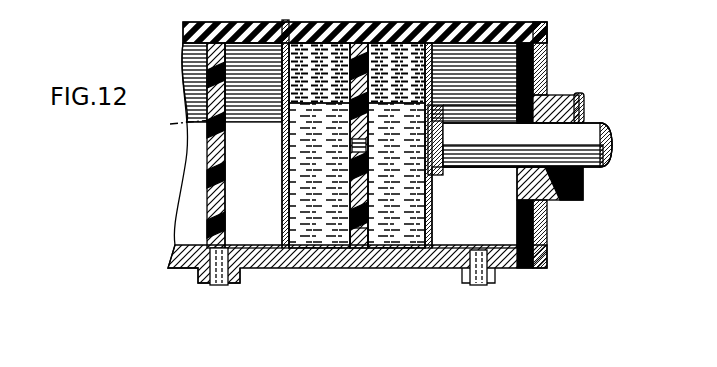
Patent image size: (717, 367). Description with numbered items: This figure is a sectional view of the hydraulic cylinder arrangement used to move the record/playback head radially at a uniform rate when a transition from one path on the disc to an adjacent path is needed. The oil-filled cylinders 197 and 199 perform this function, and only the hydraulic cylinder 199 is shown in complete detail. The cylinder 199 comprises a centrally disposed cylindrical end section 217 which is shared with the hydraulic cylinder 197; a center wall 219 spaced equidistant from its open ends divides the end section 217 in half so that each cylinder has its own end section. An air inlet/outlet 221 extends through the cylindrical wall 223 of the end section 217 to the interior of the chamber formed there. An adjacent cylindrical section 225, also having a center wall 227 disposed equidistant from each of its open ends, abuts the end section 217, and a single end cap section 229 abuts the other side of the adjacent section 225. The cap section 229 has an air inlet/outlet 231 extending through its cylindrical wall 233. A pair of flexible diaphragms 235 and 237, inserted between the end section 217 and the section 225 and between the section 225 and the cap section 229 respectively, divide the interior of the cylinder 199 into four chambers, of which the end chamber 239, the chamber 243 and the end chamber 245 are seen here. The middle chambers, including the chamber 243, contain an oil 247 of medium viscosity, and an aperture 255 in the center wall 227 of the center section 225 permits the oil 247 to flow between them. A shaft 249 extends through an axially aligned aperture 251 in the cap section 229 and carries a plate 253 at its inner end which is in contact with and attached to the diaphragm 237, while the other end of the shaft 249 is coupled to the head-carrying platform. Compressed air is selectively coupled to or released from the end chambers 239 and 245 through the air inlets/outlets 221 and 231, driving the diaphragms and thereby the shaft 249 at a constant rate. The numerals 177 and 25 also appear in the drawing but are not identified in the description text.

The cylindrical end section 217 is at (204, 21).
The hydraulic cylinder 197 is at (168, 54).
The center wall 219 is at (215, 123).
The flexible diaphragm 235 is at (215, 196).
The end chamber 239 is at (253, 145).
The oil 247 is at (279, 96).
The hydraulic cylinder 199 is at (352, 12).
The aperture 255 is at (319, 145).
The cylindrical wall 233 is at (376, 22).
The center wall 227 is at (352, 230).
The chamber 243 is at (396, 145).
The flexible diaphragm 237 is at (442, 216).
The end chamber 245 is at (494, 199).
The cover plate 177 is at (470, 2).
The plate 253 is at (443, 125).
The shaft 249 is at (606, 131).
The axially aligned aperture 251 is at (576, 94).
The end cap section 229 is at (538, 270).
The adjacent cylindrical section 225 is at (386, 270).
The cylindrical wall 223 is at (184, 270).
The air inlet/outlet 221 is at (240, 283).
The air inlet/outlet 231 is at (493, 278).
The housing 25 is at (660, 22).